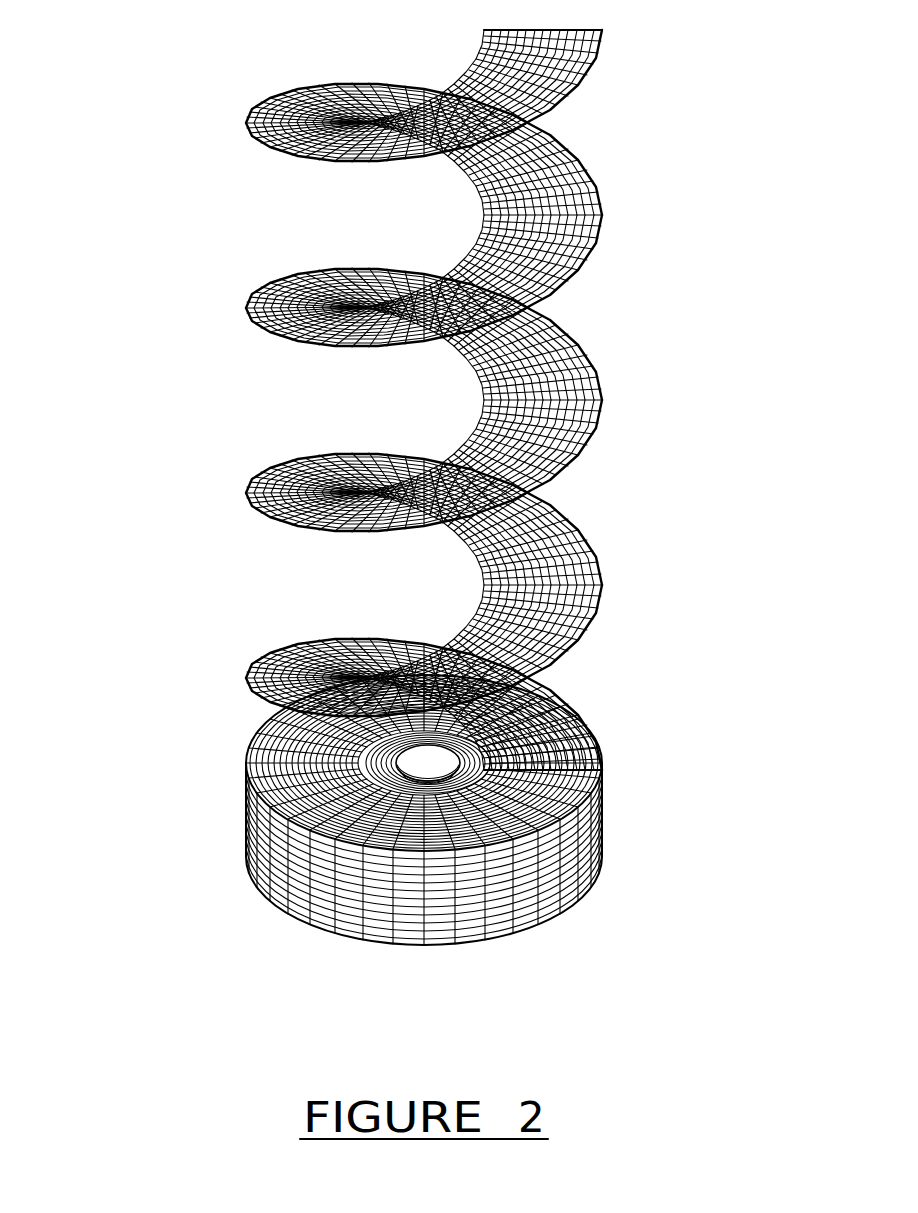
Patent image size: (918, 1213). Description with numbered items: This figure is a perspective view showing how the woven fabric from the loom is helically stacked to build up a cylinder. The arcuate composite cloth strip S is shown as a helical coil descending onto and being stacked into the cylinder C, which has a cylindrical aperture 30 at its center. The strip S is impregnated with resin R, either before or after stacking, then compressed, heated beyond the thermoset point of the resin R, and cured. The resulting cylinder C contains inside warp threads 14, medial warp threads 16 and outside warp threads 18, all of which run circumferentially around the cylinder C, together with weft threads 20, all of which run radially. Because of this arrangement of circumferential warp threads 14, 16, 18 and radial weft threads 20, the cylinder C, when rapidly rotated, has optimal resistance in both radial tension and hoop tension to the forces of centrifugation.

The arcuate composite cloth strip S is at (429, 385).
The resin R is at (301, 456).
The cylinder C is at (400, 810).
The inside warp threads 14 is at (300, 715).
The medial warp threads 16 is at (330, 768).
The outside warp threads 18 is at (253, 744).
The weft threads 20 is at (577, 758).
The cylindrical aperture 30 is at (613, 709).